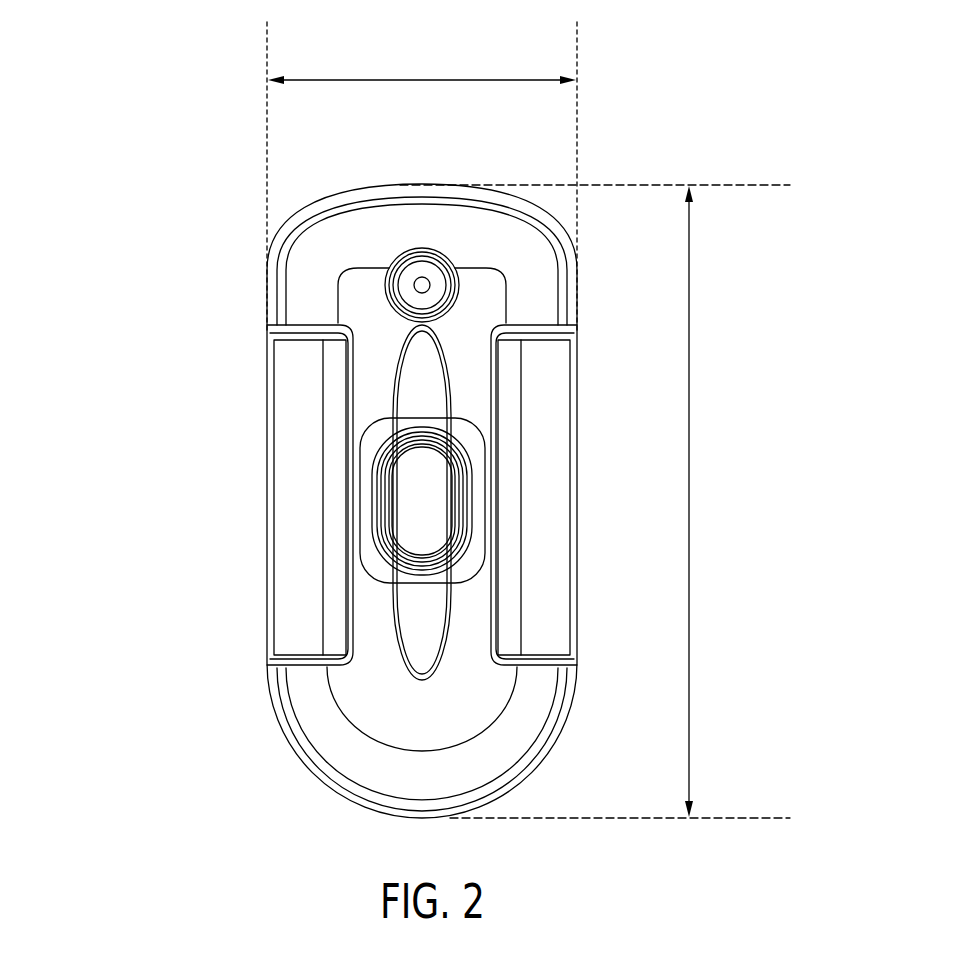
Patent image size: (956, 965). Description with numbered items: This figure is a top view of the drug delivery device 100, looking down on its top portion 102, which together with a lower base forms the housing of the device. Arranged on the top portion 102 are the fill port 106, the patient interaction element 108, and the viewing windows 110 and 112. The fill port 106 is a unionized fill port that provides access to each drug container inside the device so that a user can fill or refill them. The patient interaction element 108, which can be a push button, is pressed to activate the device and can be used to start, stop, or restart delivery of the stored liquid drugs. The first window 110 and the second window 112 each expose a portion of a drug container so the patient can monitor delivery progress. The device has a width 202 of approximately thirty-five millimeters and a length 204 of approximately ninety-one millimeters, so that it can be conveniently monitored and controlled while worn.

The drug delivery device 100 is at (130, 134).
The top portion 102 is at (497, 197).
The fill port 106 is at (419, 281).
The patient interaction element 108 is at (442, 462).
The first window 110 is at (267, 520).
The second window 112 is at (577, 525).
The width 202 is at (437, 80).
The length 204 is at (690, 482).